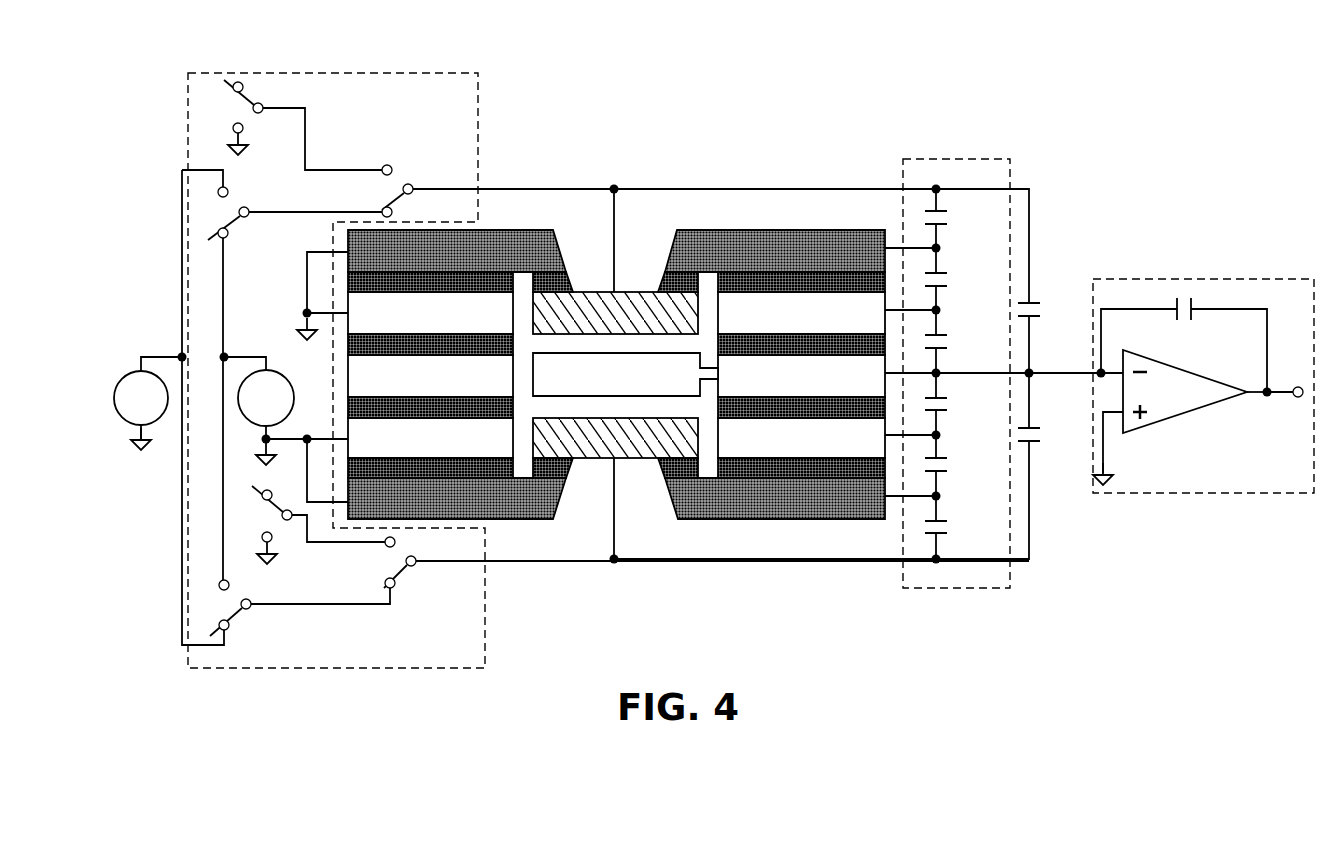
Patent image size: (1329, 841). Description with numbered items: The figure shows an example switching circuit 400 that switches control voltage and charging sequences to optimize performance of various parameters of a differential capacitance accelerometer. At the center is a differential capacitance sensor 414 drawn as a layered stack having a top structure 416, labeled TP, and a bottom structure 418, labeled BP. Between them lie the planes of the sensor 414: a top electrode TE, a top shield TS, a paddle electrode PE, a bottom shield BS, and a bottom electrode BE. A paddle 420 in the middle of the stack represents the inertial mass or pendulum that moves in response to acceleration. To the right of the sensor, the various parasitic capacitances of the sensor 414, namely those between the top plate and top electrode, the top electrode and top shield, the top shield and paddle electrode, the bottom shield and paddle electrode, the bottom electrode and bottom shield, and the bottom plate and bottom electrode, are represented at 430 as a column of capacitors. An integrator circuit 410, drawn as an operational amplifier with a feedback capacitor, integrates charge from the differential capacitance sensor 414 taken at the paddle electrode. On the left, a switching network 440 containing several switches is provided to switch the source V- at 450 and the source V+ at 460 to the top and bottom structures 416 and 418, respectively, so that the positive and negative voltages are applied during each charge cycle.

The switching circuit 400 is at (1010, 94).
The integrator circuit 410 is at (1175, 279).
The differential capacitance sensor 414 is at (633, 247).
The top structure 416 is at (747, 188).
The bottom structure 418 is at (752, 560).
The paddle 420 is at (624, 374).
The parasitic capacitances 430 is at (955, 159).
The switching network 440 is at (323, 73).
The source V- 450 is at (128, 372).
The source V+ 460 is at (284, 372).